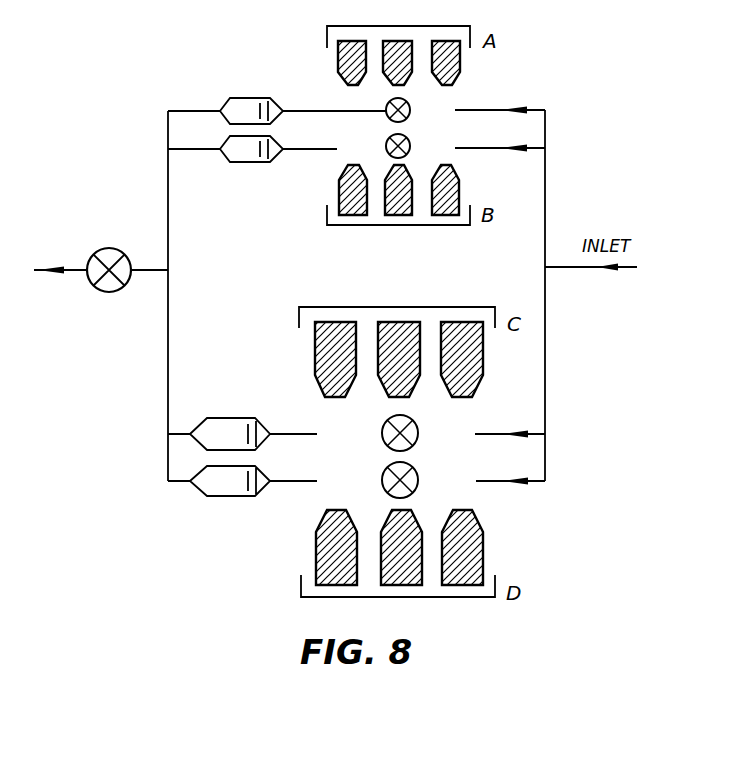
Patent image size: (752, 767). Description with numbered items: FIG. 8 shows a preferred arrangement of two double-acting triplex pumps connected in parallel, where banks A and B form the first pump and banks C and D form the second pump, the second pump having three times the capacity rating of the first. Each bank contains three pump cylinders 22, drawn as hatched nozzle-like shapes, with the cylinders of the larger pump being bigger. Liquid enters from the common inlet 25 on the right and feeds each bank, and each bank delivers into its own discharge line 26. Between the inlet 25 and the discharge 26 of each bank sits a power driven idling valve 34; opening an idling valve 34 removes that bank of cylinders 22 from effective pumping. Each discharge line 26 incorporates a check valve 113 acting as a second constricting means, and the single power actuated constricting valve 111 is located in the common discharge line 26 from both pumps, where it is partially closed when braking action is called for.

The pump cylinder 22 is at (338, 70).
The idling valve 34 is at (386, 112).
The check valve 113 is at (230, 118).
The constricting valve 111 is at (97, 290).
The discharge line 26 is at (146, 271).
The inlet 25 is at (572, 268).